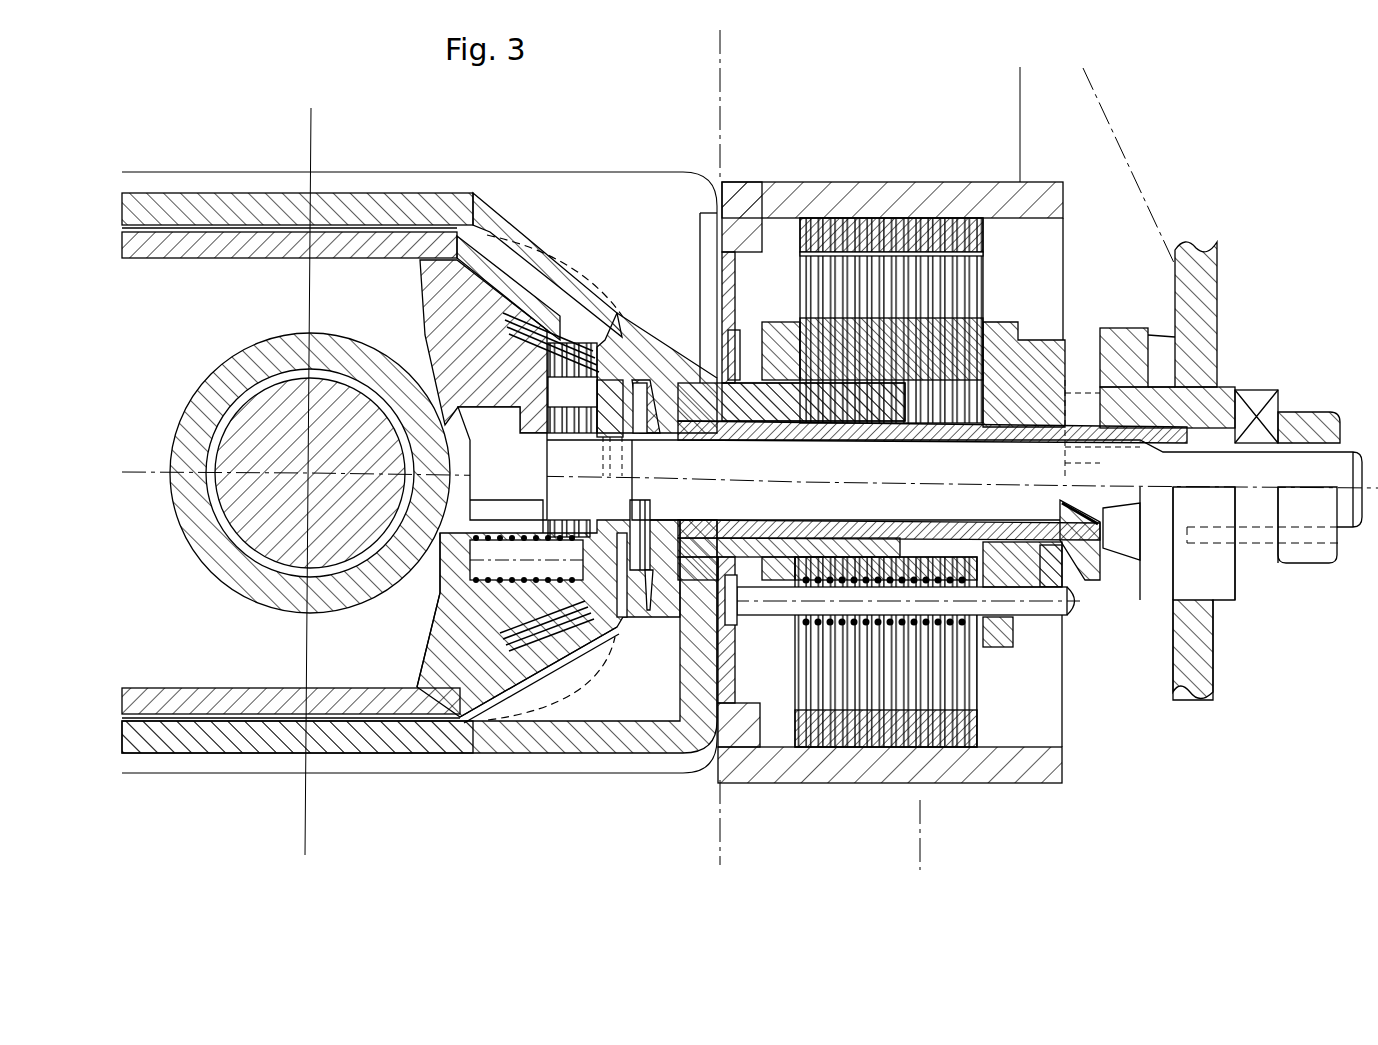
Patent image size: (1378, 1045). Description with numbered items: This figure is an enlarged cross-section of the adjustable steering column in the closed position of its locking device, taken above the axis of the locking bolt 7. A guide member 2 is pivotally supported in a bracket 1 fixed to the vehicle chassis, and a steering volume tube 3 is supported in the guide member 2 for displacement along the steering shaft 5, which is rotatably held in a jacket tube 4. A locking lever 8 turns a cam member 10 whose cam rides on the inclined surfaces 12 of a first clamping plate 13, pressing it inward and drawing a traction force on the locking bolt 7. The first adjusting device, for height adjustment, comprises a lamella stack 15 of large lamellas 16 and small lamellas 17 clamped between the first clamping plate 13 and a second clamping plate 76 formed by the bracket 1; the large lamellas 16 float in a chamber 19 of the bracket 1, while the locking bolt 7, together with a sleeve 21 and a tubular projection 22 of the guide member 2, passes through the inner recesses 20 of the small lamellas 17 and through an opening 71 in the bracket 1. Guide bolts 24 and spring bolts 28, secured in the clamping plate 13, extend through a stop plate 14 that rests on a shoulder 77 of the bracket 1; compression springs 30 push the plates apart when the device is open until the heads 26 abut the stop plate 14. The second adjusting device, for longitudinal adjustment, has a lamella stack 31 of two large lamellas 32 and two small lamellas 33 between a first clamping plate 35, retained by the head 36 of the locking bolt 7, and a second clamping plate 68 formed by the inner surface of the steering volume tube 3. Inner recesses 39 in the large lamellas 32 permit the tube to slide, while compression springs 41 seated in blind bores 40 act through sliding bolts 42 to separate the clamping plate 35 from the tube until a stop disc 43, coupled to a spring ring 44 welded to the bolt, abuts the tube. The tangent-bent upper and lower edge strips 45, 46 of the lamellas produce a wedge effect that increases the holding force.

The bracket 1 is at (880, 200).
The guide member 2 is at (373, 200).
The steering volume tube 3 is at (337, 240).
The jacket tube 4 is at (210, 377).
The steering shaft 5 is at (257, 455).
The locking bolt 7 is at (1040, 587).
The locking lever 8 is at (1200, 323).
The cam member 10 is at (1152, 623).
The inclined surfaces 12 is at (1075, 505).
The first clamping plate 13 is at (1062, 337).
The stop plate 14 is at (777, 383).
The lamella stack 15 is at (1005, 243).
The large lamellas 16 is at (840, 643).
The small lamellas 17 is at (880, 650).
The chamber 19 is at (1033, 727).
The inner recesses 20 is at (985, 220).
The sleeve 21 is at (687, 413).
The tubular projection 22 is at (887, 383).
The guide bolts 24 is at (750, 347).
The heads 26 is at (722, 235).
The spring bolts 28 is at (1012, 607).
The compression springs 30 is at (828, 690).
The lamella stack 31 is at (522, 563).
The large lamellas 32 is at (565, 340).
The small lamellas 33 is at (617, 393).
The first clamping plate 35 is at (438, 265).
The head 36 is at (502, 440).
The inner recess 39 is at (590, 365).
The blind bores 40 is at (455, 690).
The compression springs 41 is at (488, 667).
The sliding bolts 42 is at (500, 640).
The stop disc 43 is at (618, 607).
The spring ring 44 is at (643, 617).
The upper edge strip 45 is at (577, 313).
The lower edge strip 46 is at (540, 353).
The second clamping plate 68 is at (553, 645).
The opening 71 is at (738, 330).
The second clamping plate 76 is at (792, 237).
The shoulder 77 is at (772, 687).